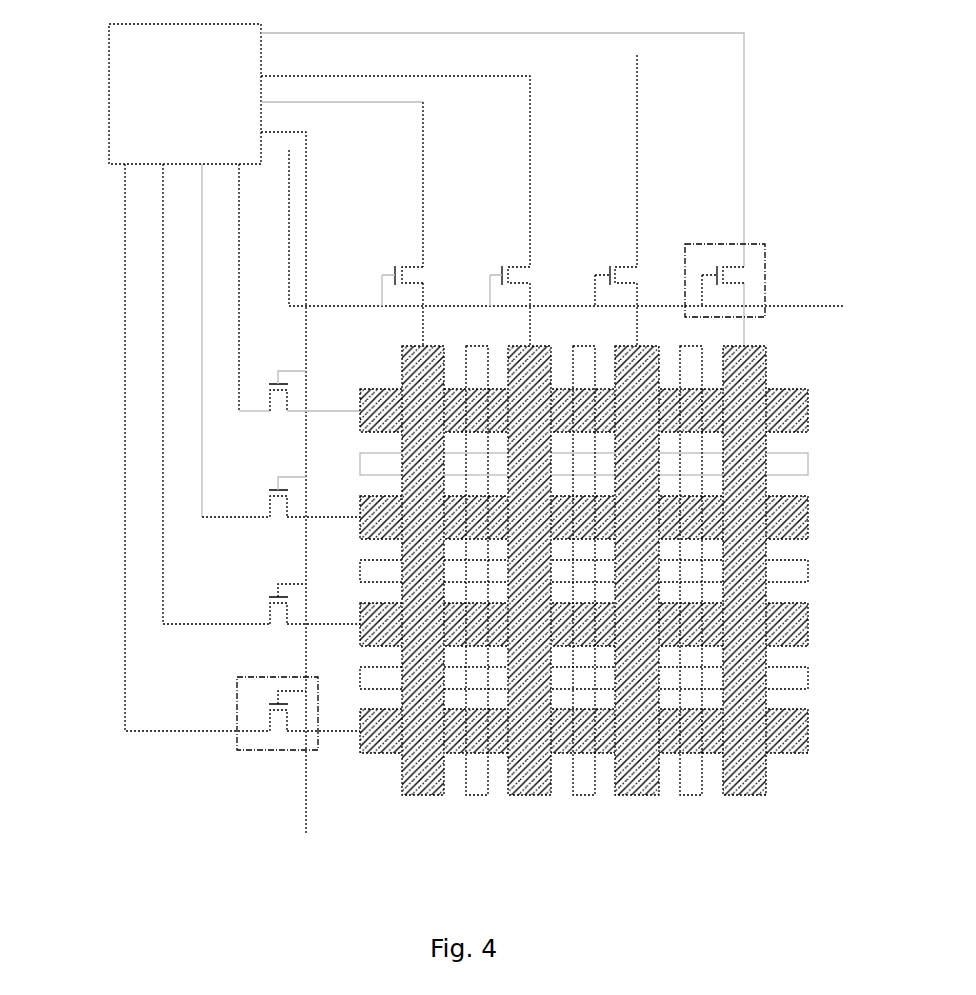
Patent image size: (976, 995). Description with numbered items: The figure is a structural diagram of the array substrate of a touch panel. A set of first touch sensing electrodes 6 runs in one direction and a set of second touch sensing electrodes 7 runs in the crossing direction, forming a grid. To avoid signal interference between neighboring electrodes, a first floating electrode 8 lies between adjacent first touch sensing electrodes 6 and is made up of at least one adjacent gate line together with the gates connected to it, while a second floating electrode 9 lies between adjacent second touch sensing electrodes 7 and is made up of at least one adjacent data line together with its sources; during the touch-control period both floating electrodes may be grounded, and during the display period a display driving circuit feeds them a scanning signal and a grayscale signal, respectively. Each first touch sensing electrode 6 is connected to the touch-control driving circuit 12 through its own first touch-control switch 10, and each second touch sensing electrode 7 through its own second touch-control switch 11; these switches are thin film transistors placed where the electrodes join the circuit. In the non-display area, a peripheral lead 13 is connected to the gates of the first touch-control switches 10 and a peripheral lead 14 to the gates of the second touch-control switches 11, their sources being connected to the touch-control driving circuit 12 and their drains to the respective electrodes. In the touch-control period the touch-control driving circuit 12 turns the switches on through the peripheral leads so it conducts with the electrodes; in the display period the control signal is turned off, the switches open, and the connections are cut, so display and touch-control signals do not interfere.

The first touch sensing electrode 6 is at (810, 512).
The second touch sensing electrode 7 is at (423, 795).
The first floating electrode 8 is at (808, 677).
The second floating electrode 9 is at (582, 795).
The first touch-control switch 10 is at (252, 752).
The second touch-control switch 11 is at (765, 257).
The touch-control driving circuit 12 is at (110, 62).
The peripheral lead 13 is at (306, 793).
The peripheral lead 14 is at (817, 306).